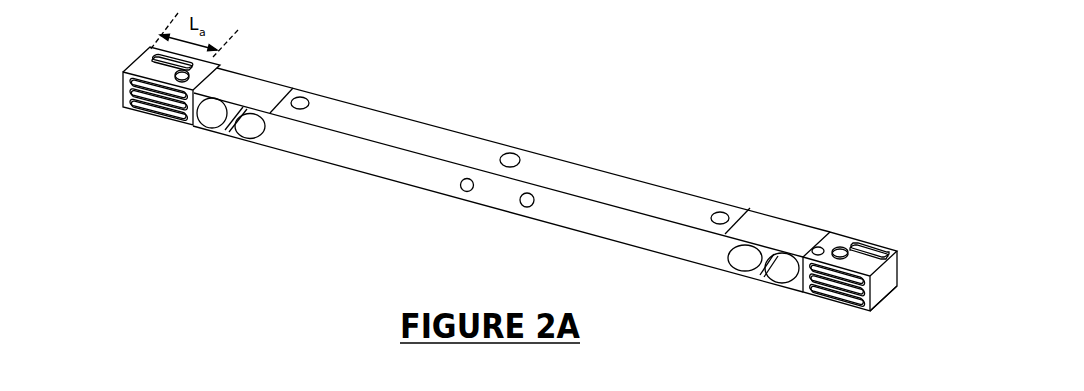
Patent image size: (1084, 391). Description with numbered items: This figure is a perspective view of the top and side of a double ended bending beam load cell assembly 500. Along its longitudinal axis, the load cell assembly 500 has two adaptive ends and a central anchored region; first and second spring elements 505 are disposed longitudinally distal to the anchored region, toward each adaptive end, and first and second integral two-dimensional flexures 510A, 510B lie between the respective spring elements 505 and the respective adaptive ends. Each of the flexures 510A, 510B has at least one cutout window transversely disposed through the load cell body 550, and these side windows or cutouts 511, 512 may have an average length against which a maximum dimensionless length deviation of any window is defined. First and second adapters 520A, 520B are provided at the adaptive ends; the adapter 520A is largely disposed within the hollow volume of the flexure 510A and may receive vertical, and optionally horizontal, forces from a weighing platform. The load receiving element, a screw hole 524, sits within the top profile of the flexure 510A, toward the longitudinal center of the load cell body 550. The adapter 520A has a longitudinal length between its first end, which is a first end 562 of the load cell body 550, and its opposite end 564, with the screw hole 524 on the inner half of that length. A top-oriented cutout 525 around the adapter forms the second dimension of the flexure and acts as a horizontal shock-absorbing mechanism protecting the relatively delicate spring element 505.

The double ended bending beam load cell assembly 500 is at (385, 215).
The spring element 505 is at (213, 142).
The first integral two-dimensional flexure 510A is at (155, 127).
The second integral two-dimensional flexure 510B is at (833, 308).
The first adapter 520A is at (135, 53).
The second adapter 520B is at (864, 250).
The side window 511 is at (860, 311).
The side window 512 is at (869, 293).
The screw hole 524 is at (827, 237).
The top-oriented cutout 525 is at (850, 237).
The load cell body 550 is at (528, 143).
The first end of load cell body 562 is at (119, 88).
The opposite end of adapter 564 is at (200, 87).